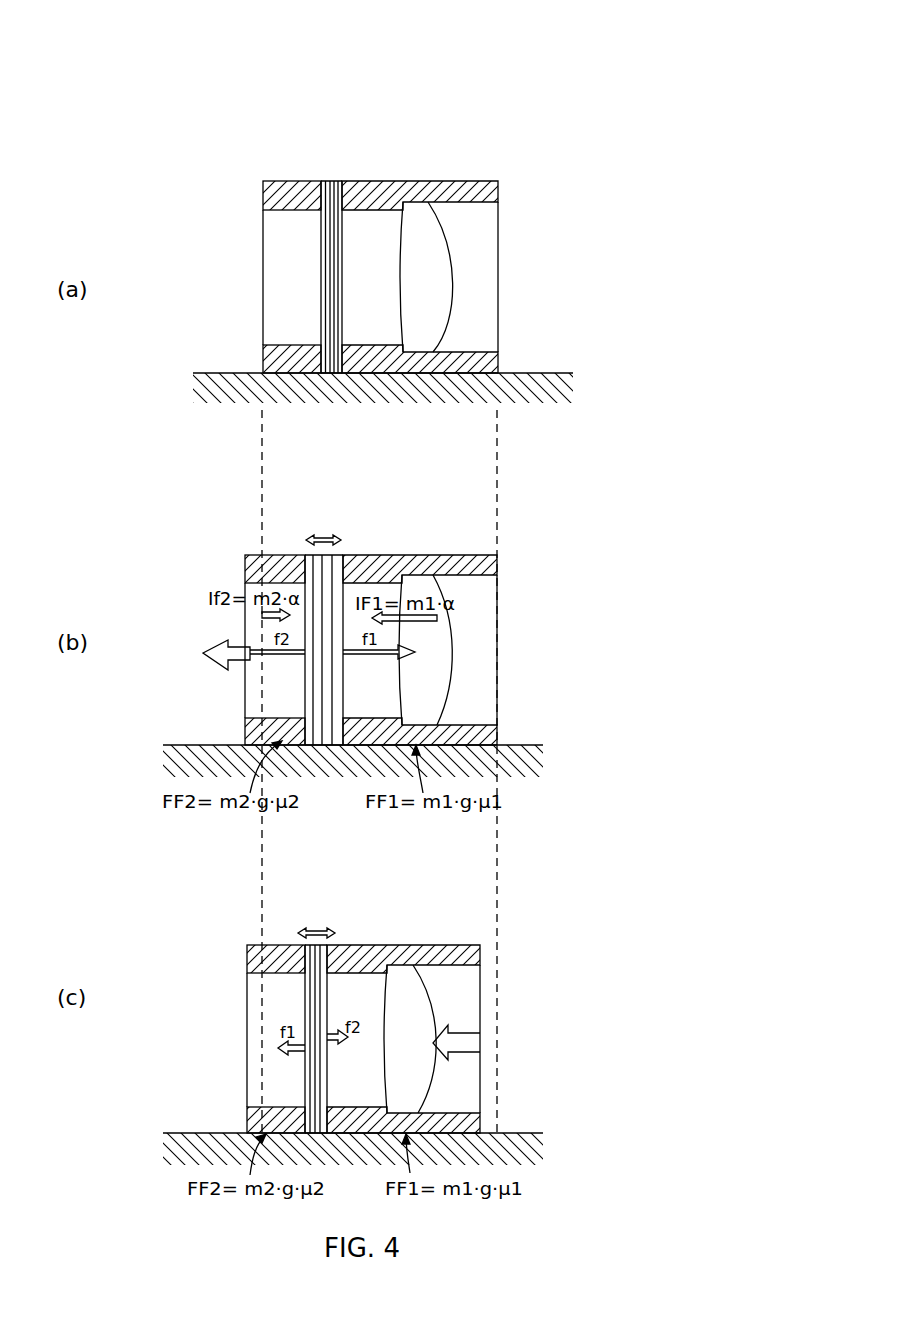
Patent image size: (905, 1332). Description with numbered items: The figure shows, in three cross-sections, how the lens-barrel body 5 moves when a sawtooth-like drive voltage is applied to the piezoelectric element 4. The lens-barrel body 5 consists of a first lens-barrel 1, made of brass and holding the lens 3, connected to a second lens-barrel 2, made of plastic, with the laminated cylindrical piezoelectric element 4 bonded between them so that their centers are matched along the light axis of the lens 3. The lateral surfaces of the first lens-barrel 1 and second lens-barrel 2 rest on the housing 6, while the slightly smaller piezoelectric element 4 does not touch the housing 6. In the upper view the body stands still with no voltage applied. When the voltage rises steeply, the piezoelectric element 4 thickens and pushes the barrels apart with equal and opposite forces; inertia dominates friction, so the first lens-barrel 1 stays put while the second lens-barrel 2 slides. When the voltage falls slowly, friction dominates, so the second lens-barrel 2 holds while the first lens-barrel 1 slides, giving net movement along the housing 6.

The first lens-barrel 1 is at (404, 180).
The second lens-barrel 2 is at (288, 180).
The lens 3 is at (445, 222).
The piezoelectric element 4 is at (342, 180).
The lens-barrel body 5 is at (362, 163).
The housing 6 is at (527, 373).